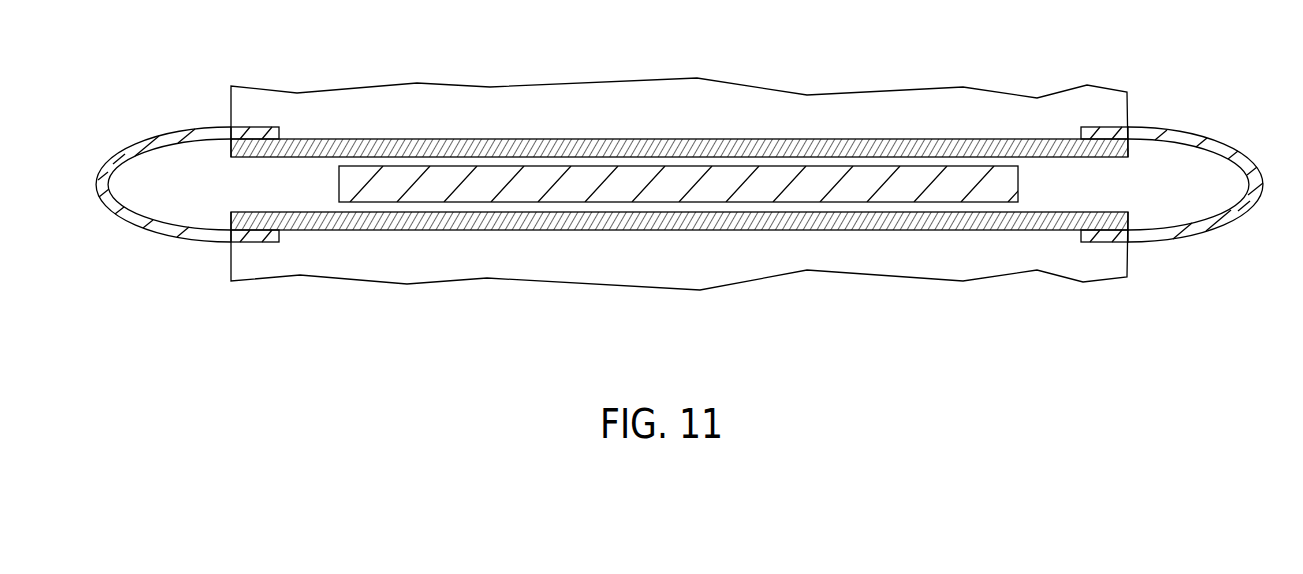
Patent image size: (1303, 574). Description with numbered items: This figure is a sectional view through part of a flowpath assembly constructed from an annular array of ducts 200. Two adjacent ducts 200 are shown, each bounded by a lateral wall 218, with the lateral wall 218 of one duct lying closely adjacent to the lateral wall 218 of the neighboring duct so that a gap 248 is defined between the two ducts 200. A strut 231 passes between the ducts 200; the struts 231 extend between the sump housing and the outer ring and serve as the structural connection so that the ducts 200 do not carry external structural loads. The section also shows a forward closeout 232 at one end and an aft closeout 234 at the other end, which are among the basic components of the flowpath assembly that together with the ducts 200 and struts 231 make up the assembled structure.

The duct 200 is at (898, 98).
The lateral wall 218 is at (1130, 152).
The strut 231 is at (1012, 185).
The forward closeout 232 is at (122, 216).
The aft closeout 234 is at (1240, 210).
The gap 248 is at (258, 192).